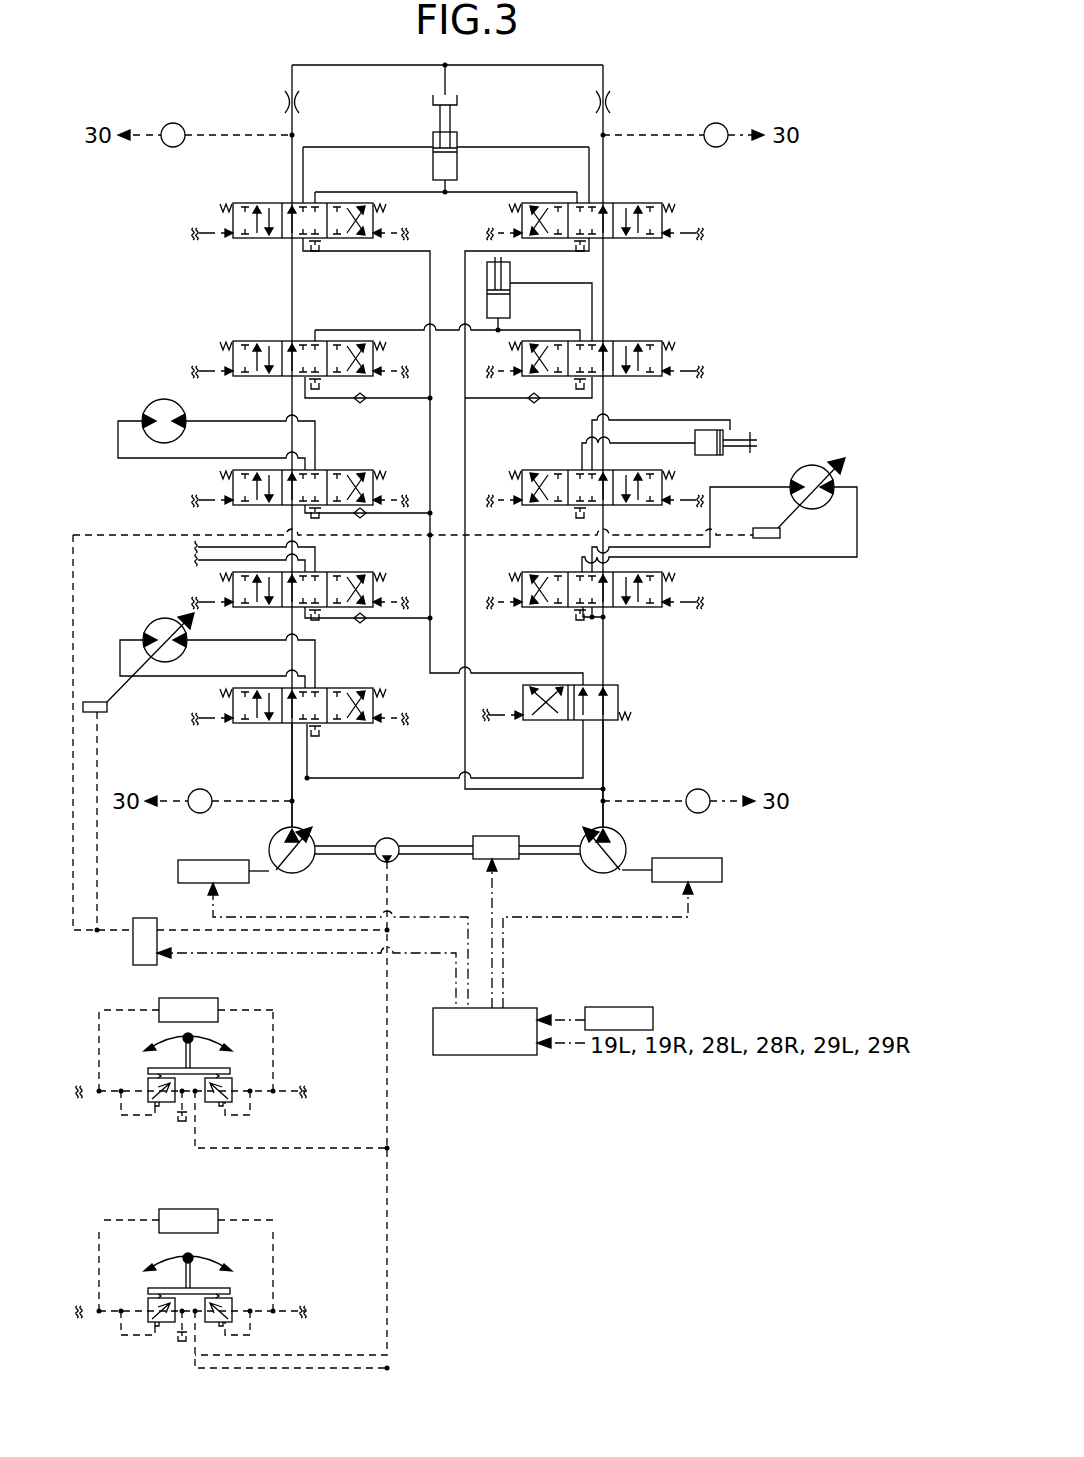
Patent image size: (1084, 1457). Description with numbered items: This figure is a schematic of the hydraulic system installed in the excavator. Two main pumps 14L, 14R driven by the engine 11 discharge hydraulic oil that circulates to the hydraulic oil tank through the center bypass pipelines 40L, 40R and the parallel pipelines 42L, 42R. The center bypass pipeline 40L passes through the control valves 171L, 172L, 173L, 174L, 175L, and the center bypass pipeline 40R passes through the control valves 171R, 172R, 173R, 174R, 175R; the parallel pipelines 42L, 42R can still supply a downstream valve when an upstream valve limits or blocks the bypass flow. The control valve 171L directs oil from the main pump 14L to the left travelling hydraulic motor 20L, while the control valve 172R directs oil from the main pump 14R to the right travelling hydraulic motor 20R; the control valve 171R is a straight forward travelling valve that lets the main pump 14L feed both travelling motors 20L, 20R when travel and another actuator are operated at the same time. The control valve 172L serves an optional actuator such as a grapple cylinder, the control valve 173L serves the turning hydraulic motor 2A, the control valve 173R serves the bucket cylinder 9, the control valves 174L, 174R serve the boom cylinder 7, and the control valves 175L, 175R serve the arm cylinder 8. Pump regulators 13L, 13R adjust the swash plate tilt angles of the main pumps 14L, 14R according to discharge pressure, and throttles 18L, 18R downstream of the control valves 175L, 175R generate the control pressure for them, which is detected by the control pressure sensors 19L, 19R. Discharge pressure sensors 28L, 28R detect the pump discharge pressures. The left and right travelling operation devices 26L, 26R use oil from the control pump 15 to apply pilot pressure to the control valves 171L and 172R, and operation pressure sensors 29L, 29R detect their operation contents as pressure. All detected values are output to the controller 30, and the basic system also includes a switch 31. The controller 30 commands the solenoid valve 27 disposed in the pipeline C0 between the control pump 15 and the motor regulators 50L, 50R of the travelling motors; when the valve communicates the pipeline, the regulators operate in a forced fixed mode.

The turning hydraulic motor 2A is at (144, 414).
The boom cylinder 7 is at (510, 314).
The arm cylinder 8 is at (433, 132).
The bucket cylinder 9 is at (740, 435).
The engine 11 is at (516, 843).
The pump regulator 13L is at (178, 872).
The pump regulator 13R is at (723, 869).
The main pump 14L is at (271, 845).
The main pump 14R is at (627, 845).
The control pump 15 is at (393, 846).
The throttle 18L is at (280, 108).
The throttle 18R is at (612, 108).
The control pressure sensor 19L is at (173, 123).
The control pressure sensor 19R is at (717, 123).
The left travelling hydraulic motor 20L is at (152, 630).
The right travelling hydraulic motor 20R is at (836, 487).
The left travelling operation device 26L is at (108, 1110).
The right travelling operation device 26R is at (108, 1330).
The solenoid valve 27 is at (138, 919).
The discharge pressure sensor 28L is at (200, 794).
The discharge pressure sensor 28R is at (698, 788).
The operation pressure sensor 29L is at (218, 1010).
The operation pressure sensor 29R is at (218, 1221).
The controller 30 is at (432, 1030).
The switch 31 is at (654, 1019).
The center bypass pipeline 40L is at (292, 778).
The center bypass pipeline 40R is at (612, 781).
The parallel pipeline 42L is at (422, 654).
The parallel pipeline 42R is at (478, 654).
The motor regulator 50L is at (109, 712).
The motor regulator 50R is at (782, 533).
The control valve 171L is at (233, 709).
The control valve 171R is at (616, 707).
The control valve 172L is at (219, 593).
The control valve 172R is at (671, 590).
The control valve 173L is at (233, 491).
The control valve 173R is at (657, 485).
The control valve 174L is at (233, 362).
The control valve 174R is at (657, 360).
The control valve 175L is at (233, 224).
The control valve 175R is at (657, 222).
The pipeline C0 is at (173, 929).